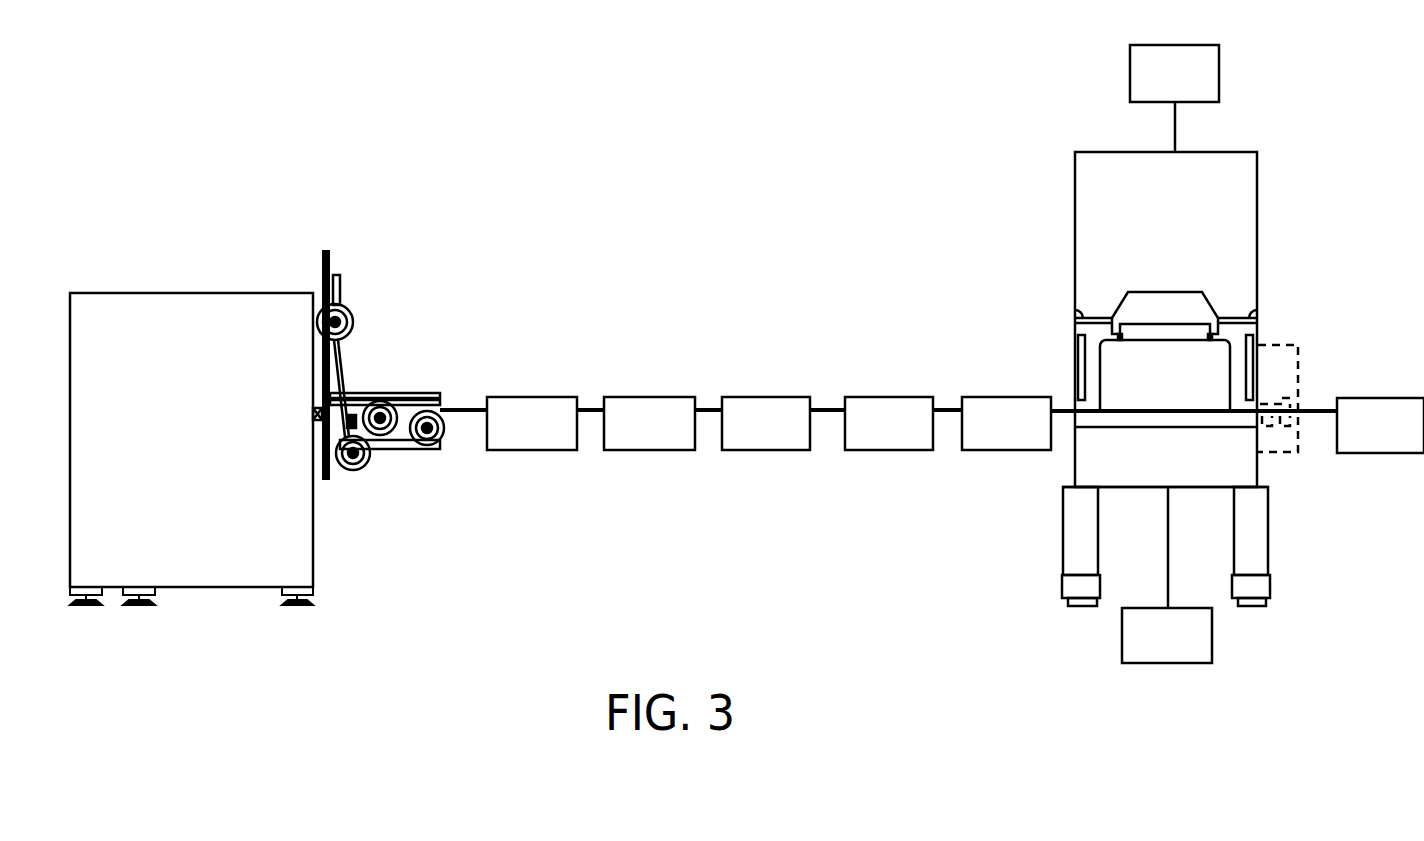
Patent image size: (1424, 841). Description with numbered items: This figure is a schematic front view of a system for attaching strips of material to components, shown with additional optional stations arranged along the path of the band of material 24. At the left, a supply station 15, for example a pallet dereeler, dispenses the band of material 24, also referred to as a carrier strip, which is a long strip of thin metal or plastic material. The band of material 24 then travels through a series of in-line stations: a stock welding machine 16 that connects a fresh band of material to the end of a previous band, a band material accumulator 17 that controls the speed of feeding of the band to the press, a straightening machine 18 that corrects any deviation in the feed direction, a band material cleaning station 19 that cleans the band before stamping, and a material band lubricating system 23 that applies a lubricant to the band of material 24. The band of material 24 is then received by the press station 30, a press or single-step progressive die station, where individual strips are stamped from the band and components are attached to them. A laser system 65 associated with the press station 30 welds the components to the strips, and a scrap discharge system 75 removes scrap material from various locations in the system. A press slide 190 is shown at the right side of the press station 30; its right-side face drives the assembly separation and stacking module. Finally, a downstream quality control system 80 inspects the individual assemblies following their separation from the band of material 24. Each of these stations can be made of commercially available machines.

The supply station 15 is at (173, 298).
The band of material 24 is at (463, 403).
The stock welding machine 16 is at (521, 437).
The band material accumulator 17 is at (656, 408).
The straightening machine 18 is at (771, 444).
The band material cleaning station 19 is at (870, 410).
The material band lubricating system 23 is at (1001, 442).
The press station 30 is at (1127, 183).
The laser system 65 is at (1146, 73).
The scrap discharge system 75 is at (1197, 643).
The press slide 190 is at (1299, 366).
The downstream quality control system 80 is at (1364, 411).